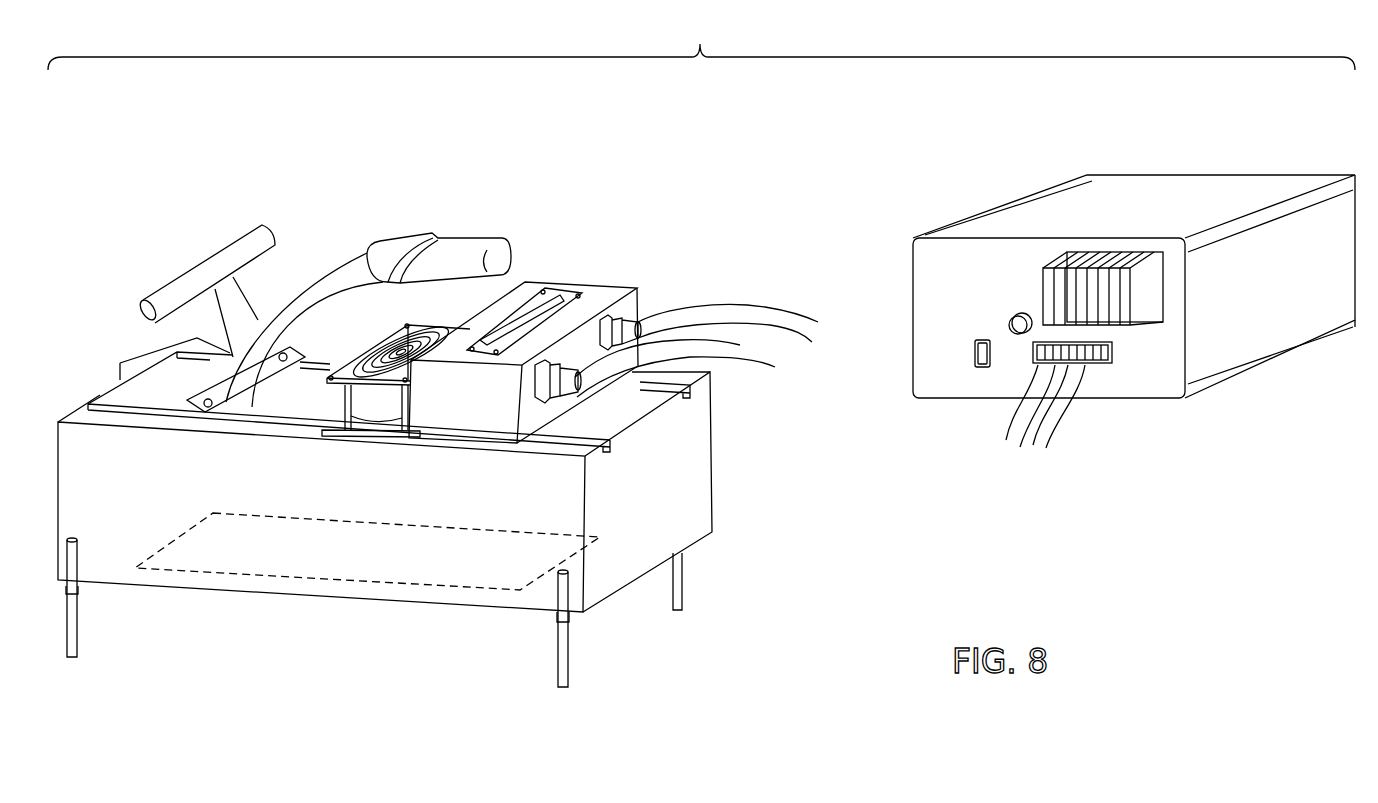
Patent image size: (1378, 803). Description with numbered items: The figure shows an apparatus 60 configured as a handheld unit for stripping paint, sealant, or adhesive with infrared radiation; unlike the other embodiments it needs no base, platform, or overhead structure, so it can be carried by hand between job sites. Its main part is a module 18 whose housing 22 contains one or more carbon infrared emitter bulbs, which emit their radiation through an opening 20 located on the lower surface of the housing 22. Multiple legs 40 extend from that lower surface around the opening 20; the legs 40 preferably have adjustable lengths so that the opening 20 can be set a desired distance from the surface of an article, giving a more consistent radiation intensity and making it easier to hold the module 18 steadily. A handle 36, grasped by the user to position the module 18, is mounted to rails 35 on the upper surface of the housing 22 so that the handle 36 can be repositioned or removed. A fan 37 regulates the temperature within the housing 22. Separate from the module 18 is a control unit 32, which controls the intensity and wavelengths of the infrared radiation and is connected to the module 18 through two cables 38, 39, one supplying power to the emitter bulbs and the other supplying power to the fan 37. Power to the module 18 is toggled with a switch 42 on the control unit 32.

The apparatus 60 is at (701, 42).
The module 18 is at (607, 200).
The housing 22 is at (697, 485).
The opening 20 is at (230, 563).
The rails 35 is at (180, 366).
The handle 36 is at (347, 270).
The fan 37 is at (368, 412).
The cable 38 is at (786, 310).
The cable 39 is at (730, 357).
The legs 40 is at (78, 633).
The control unit 32 is at (968, 196).
The switch 42 is at (975, 345).